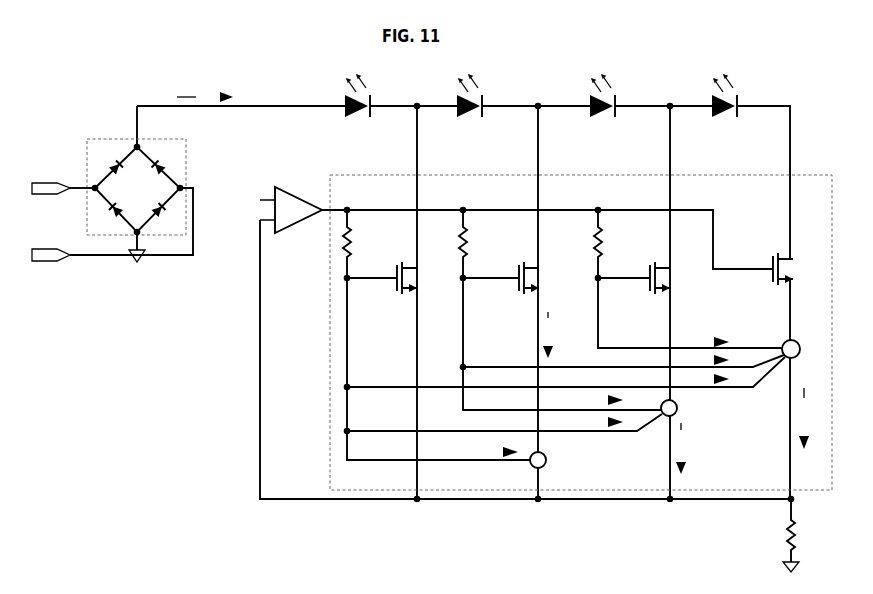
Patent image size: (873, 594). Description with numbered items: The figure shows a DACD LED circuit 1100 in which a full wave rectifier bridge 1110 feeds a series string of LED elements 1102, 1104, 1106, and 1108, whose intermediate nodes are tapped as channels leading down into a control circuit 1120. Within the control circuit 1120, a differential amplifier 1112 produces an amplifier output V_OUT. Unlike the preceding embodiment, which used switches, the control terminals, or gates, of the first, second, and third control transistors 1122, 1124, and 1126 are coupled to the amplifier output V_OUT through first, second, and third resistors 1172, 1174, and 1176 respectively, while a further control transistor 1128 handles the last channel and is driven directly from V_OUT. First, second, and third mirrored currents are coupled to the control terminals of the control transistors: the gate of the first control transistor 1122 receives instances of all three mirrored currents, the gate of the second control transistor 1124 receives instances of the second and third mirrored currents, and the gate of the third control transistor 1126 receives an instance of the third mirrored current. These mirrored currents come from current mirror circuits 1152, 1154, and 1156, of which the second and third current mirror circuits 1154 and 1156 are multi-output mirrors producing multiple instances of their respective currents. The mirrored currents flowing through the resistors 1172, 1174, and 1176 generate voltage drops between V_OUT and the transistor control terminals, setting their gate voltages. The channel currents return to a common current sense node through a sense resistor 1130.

The DACD LED circuit 1100 is at (165, 66).
The full wave rectifier bridge 1110 is at (115, 139).
The differential amplifier 1112 is at (275, 187).
The control circuit 1120 is at (337, 174).
The LED segment 1 1102 is at (344, 92).
The LED segment 2 1104 is at (455, 92).
The LED segment 3 1106 is at (588, 92).
The LED segment 4 1108 is at (710, 92).
The first resistor 1172 is at (352, 236).
The second resistor 1174 is at (468, 236).
The third resistor 1176 is at (603, 236).
The first control transistor 1122 is at (397, 286).
The second control transistor 1124 is at (518, 287).
The third control transistor 1126 is at (650, 287).
The transistor 1128 is at (773, 278).
The current summing node 1152 is at (531, 465).
The second current mirror circuit 1154 is at (678, 412).
The third current mirror circuit 1156 is at (784, 343).
The current sense resistor 1130 is at (787, 528).